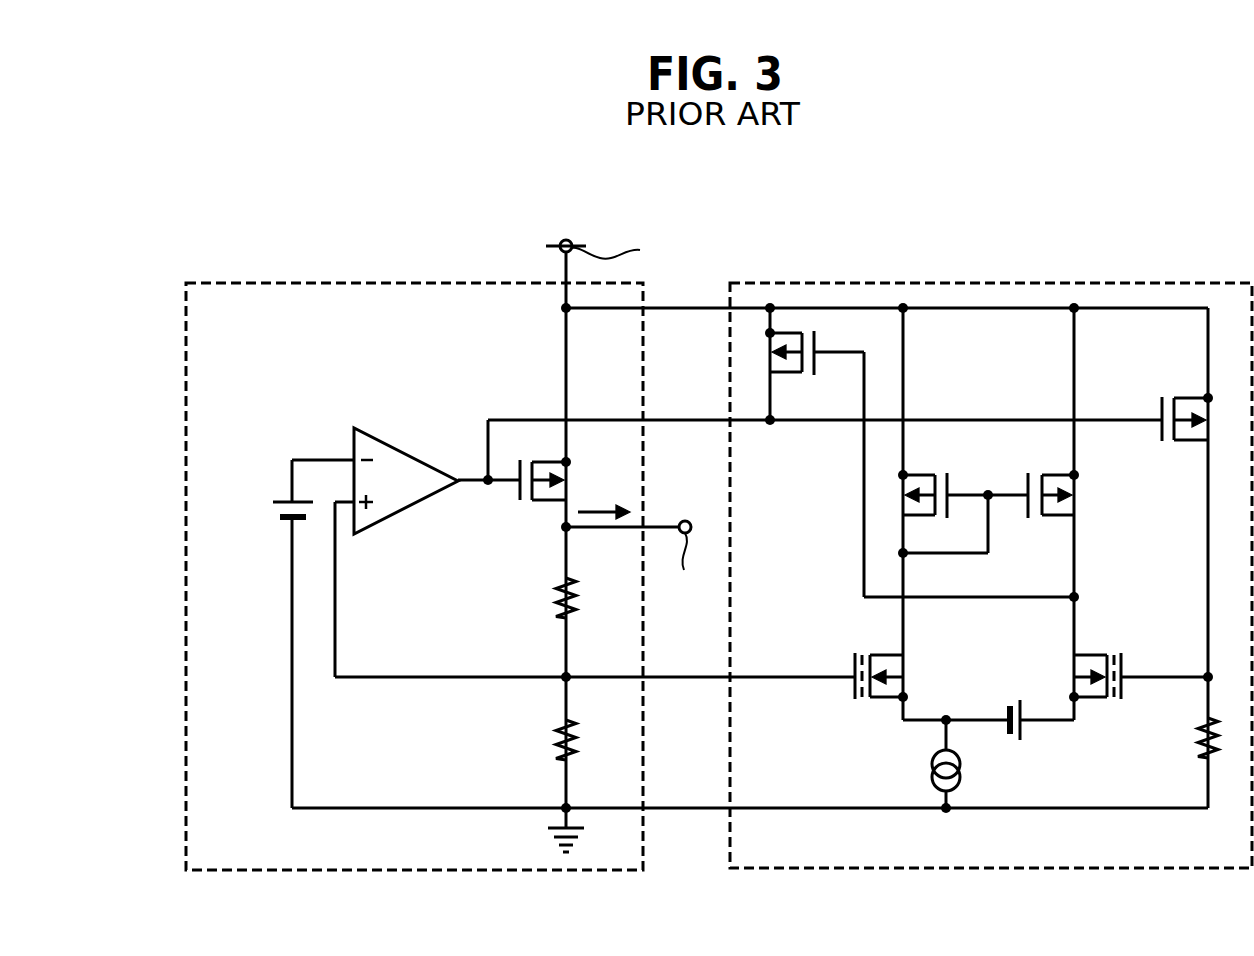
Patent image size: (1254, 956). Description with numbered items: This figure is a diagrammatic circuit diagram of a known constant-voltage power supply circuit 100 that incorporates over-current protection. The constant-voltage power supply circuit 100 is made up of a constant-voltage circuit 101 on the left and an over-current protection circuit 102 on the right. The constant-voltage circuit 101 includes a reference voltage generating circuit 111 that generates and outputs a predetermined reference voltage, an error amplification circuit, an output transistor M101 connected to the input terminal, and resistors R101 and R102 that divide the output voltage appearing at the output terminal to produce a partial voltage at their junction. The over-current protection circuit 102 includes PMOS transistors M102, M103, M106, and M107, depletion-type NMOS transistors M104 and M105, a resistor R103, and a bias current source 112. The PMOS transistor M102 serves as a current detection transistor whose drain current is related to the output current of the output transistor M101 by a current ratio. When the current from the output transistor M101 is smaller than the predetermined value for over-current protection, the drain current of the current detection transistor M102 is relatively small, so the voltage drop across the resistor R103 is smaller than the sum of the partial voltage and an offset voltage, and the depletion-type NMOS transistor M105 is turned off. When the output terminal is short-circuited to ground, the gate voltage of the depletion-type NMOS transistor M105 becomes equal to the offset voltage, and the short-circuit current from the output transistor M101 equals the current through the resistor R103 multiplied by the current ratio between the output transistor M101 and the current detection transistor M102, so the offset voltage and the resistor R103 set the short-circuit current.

The constant-voltage power supply circuit 100 is at (800, 210).
The constant-voltage circuit 101 is at (375, 270).
The over-current protection circuit 102 is at (924, 268).
The reference voltage generating circuit 111 is at (266, 516).
The bias current source 112 is at (960, 776).
The output transistor M101 is at (531, 466).
The current detection transistor M102 is at (1171, 403).
The PMOS transistor M103 is at (828, 349).
The depletion-type NMOS transistor M104 is at (864, 662).
The depletion-type NMOS transistor M105 is at (1110, 662).
The PMOS transistor M106 is at (945, 482).
The PMOS transistor M107 is at (1031, 482).
The resistor R101 is at (532, 598).
The resistor R102 is at (532, 740).
The resistor R103 is at (1173, 738).